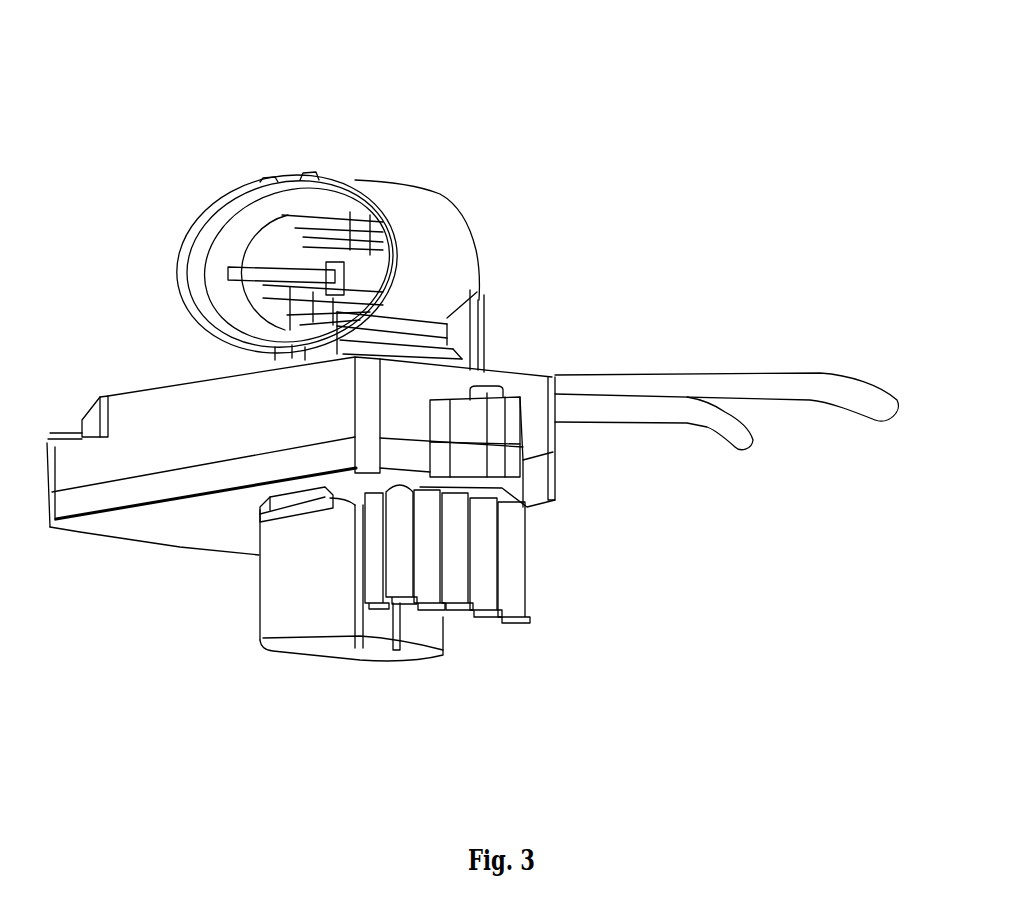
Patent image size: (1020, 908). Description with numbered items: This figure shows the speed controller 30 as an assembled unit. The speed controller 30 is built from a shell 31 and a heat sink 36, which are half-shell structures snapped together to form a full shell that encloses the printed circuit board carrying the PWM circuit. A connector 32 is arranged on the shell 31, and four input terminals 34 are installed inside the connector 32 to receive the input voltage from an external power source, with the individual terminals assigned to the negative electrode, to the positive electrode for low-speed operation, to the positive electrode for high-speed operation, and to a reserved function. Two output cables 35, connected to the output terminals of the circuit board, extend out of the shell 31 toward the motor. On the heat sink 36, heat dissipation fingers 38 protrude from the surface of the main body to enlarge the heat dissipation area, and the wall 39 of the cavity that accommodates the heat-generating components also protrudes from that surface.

The speed controller 30 is at (488, 56).
The shell 31 is at (527, 388).
The connector 32 is at (442, 283).
The input terminals 34 is at (270, 253).
The output cables 35 is at (690, 417).
The heat sink 36 is at (195, 532).
The heat dissipation fingers 38 is at (490, 550).
The wall 39 is at (302, 613).